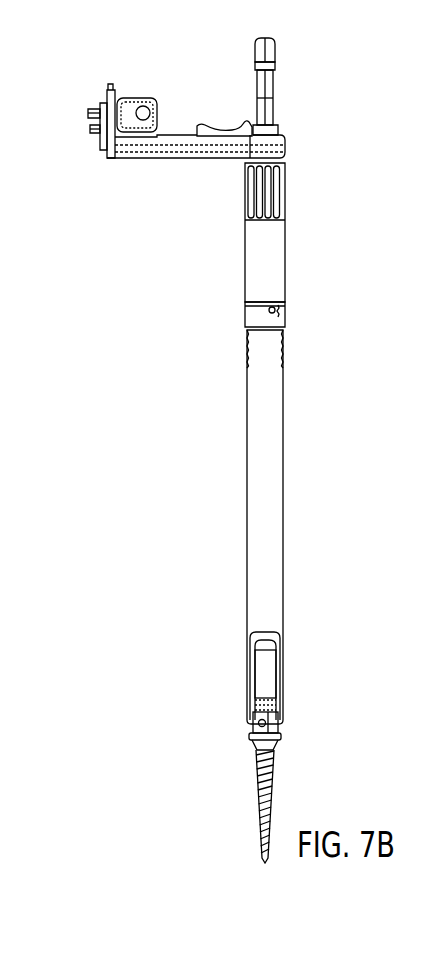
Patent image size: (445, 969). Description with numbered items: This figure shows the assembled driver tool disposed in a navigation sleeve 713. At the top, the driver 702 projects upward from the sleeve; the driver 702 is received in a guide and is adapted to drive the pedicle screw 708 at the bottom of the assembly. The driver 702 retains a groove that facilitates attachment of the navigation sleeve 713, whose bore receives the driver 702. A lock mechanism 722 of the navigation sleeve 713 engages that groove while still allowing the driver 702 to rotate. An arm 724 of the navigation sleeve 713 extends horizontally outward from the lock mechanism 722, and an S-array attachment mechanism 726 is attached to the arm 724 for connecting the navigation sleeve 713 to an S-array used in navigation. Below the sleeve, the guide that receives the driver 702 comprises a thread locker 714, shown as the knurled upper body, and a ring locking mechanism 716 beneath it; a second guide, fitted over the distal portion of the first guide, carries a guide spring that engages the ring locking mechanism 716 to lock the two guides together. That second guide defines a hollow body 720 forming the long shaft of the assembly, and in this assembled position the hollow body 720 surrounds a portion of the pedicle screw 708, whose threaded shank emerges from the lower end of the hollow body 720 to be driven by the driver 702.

The driver tool 702 is at (276, 45).
The pedicle screw 708 is at (258, 795).
The navigation sleeve 713 is at (80, 112).
The thread locker 714 is at (270, 250).
The ring locking mechanism 716 is at (272, 320).
The hollow body 720 is at (268, 457).
The lock mechanism 722 is at (202, 128).
The arm 724 is at (162, 148).
The S-array attachment mechanism 726 is at (133, 100).